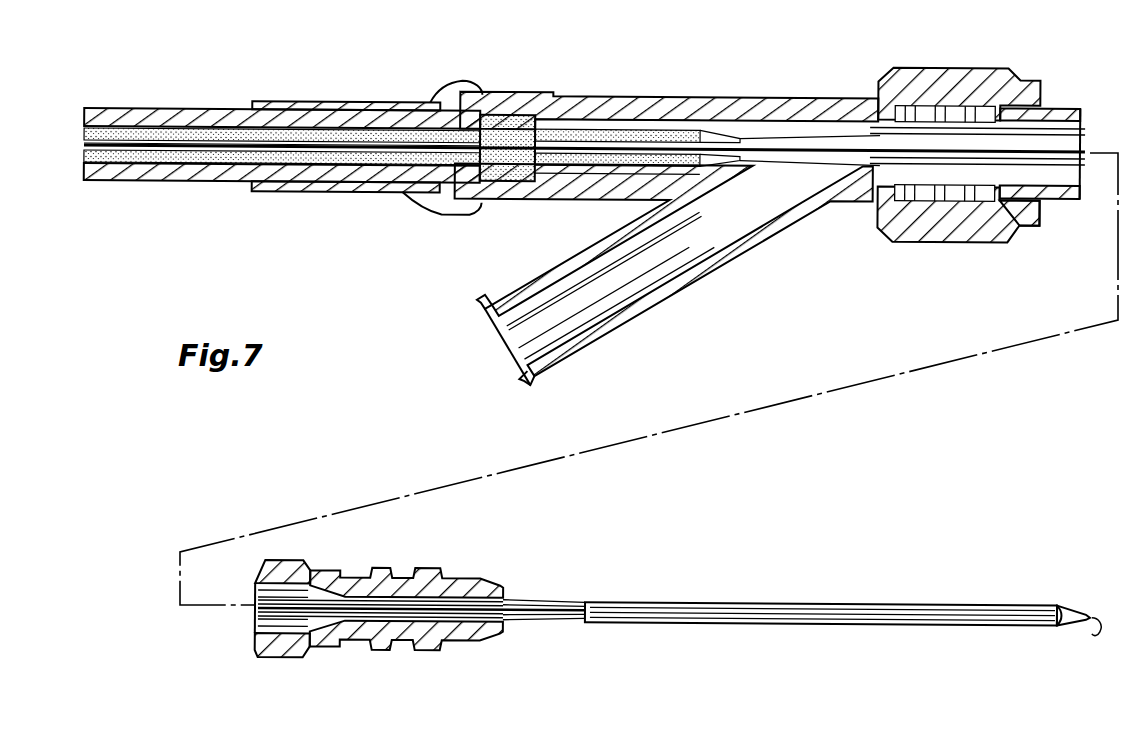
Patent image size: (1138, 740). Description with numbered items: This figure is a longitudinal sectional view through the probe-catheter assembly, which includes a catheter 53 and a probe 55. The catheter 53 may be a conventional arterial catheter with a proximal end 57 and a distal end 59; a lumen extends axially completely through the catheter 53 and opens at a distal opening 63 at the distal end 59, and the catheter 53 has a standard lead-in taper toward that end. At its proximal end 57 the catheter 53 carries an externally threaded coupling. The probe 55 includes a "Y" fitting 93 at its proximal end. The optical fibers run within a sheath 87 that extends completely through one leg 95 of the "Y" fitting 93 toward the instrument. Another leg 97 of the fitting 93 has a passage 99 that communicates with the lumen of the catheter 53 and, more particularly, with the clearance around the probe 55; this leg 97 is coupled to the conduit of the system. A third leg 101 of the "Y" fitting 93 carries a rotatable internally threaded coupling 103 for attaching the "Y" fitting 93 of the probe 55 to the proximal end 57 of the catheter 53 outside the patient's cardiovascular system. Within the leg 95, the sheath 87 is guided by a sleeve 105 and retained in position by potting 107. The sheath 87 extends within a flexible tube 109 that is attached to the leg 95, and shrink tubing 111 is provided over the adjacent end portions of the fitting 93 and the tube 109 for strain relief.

The catheter 53 is at (478, 582).
The probe 55 is at (822, 100).
The proximal end 57 is at (970, 112).
The distal end 59 is at (1094, 610).
The distal opening 63 is at (1102, 622).
The sheath 87 is at (207, 143).
The "Y" fitting 93 is at (674, 100).
The leg 95 is at (683, 96).
The leg 97 is at (745, 243).
The passage 99 is at (652, 267).
The third leg 101 is at (932, 112).
The rotatable internally threaded coupling 103 is at (940, 234).
The sleeve 105 is at (740, 124).
The potting 107 is at (500, 117).
The flexible tube 109 is at (190, 108).
The shrink tubing 111 is at (287, 102).